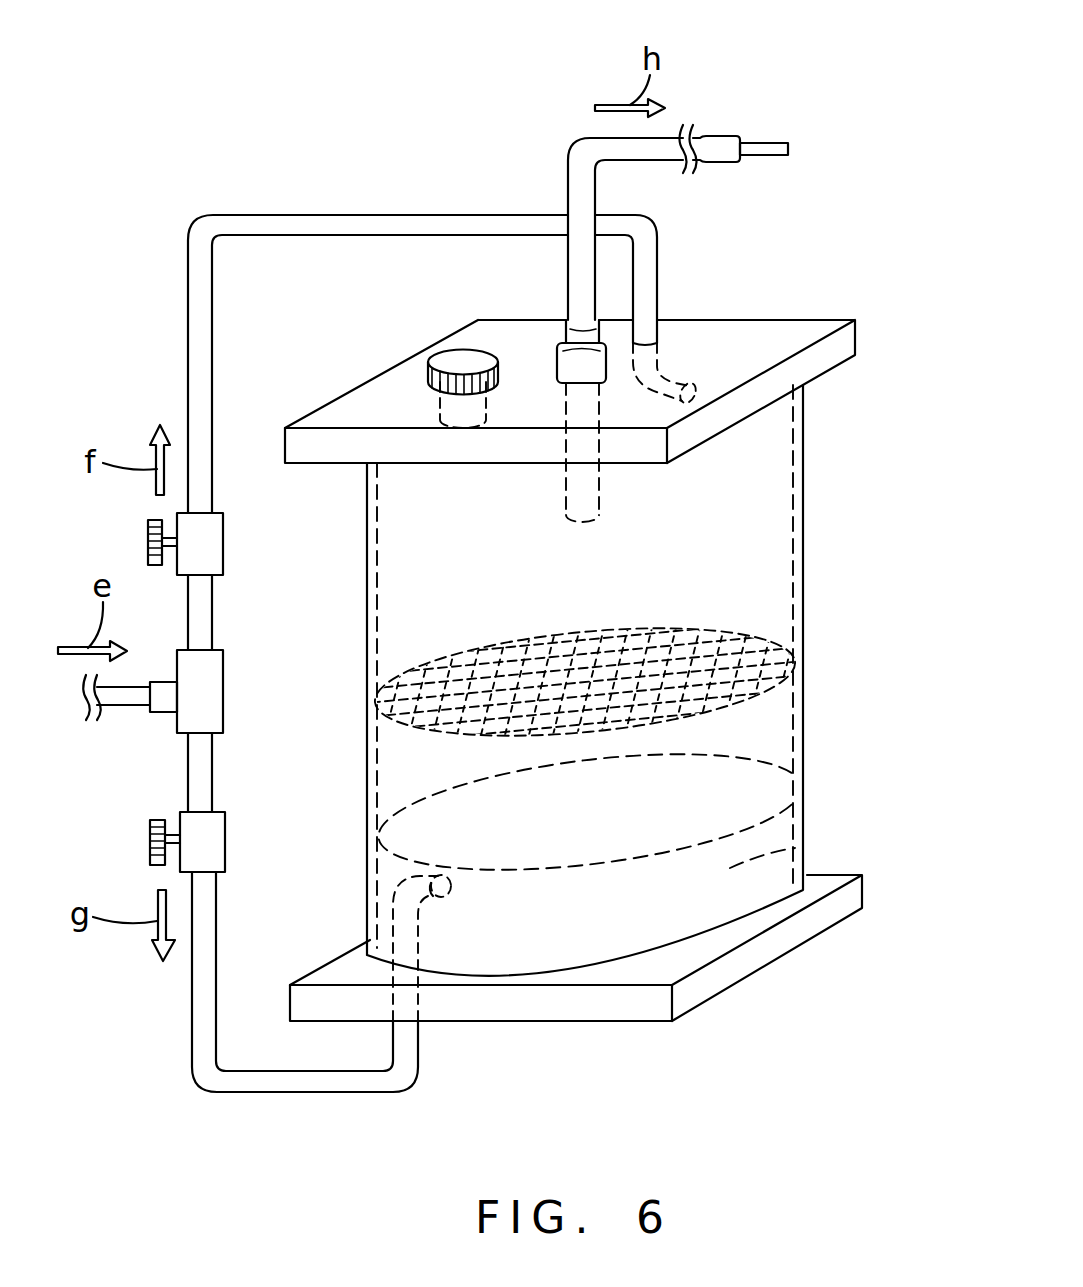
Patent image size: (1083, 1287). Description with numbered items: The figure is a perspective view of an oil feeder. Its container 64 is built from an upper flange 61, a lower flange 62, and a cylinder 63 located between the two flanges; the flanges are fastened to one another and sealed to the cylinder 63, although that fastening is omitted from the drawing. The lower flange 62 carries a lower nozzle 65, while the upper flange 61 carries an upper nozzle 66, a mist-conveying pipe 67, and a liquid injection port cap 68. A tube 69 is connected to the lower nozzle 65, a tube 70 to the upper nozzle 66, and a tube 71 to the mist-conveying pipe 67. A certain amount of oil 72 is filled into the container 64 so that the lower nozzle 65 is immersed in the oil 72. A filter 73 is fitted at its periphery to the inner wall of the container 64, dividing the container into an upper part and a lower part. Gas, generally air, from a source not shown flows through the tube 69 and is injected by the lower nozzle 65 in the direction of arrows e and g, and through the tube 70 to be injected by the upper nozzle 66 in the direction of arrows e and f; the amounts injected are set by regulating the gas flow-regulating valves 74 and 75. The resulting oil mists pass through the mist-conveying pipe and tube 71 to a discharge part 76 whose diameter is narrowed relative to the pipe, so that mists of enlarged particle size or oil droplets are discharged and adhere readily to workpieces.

The upper flange 61 is at (840, 343).
The lower flange 62 is at (770, 943).
The cylinder 63 is at (745, 578).
The container 64 is at (805, 505).
The lower nozzle 65 is at (430, 898).
The upper nozzle 66 is at (677, 364).
The mist-conveying pipe 67 is at (563, 410).
The liquid injection port cap 68 is at (455, 360).
The tube 69 is at (313, 1094).
The tube 70 is at (322, 216).
The tube 71 is at (568, 173).
The oil 72 is at (817, 848).
The filter 73 is at (763, 692).
The gas flow-regulating valve 74 is at (193, 527).
The gas flow-regulating valve 75 is at (193, 824).
The discharge part 76 is at (768, 142).